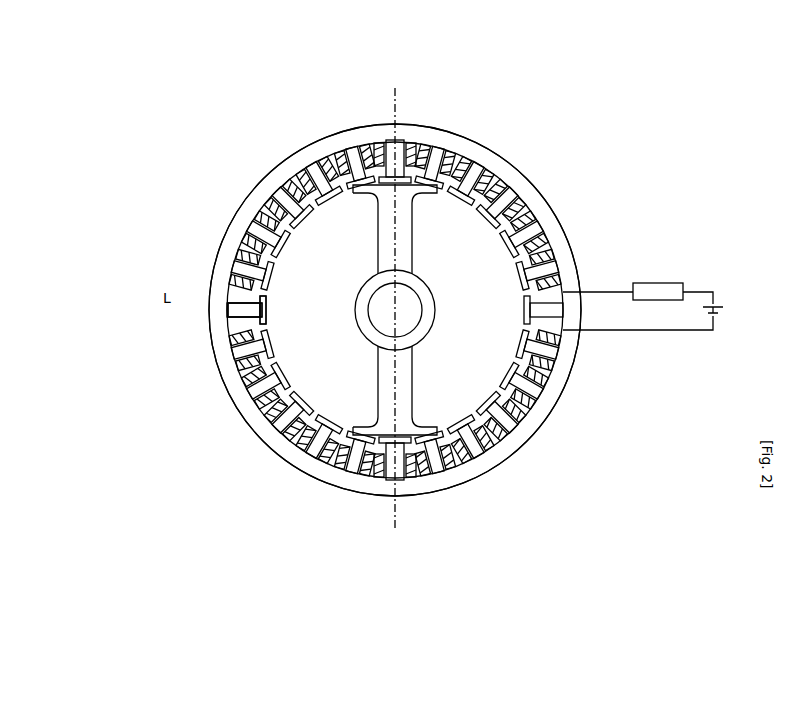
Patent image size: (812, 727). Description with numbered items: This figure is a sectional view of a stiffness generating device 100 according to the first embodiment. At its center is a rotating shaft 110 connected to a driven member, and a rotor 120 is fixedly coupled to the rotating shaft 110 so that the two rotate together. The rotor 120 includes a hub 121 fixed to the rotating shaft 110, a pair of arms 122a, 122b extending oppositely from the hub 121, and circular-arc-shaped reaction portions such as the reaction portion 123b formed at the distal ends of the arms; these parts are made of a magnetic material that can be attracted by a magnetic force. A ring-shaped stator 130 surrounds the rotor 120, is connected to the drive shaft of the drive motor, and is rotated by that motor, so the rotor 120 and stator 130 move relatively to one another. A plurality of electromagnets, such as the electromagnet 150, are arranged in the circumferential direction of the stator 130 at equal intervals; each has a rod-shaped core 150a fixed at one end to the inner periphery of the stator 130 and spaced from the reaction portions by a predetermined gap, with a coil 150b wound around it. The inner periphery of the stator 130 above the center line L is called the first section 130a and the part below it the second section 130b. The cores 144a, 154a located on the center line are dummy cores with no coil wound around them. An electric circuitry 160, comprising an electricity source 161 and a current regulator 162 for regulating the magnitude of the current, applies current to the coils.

The stiffness generating device 100 is at (207, 115).
The rotating shaft 110 is at (543, 452).
The rotor 120 is at (395, 293).
The hub 121 is at (545, 363).
The arm 122a is at (245, 175).
The arm 122b is at (250, 432).
The reaction portion 123b is at (356, 118).
The stator 130 is at (329, 291).
The first section 130a is at (140, 226).
The second section 130b is at (140, 410).
The dummy core 144a is at (576, 281).
The electromagnet 150 is at (145, 386).
The core 150a is at (240, 360).
The coil 150b is at (260, 380).
The dummy core 154a is at (225, 323).
The electric circuitry 160 is at (659, 321).
The electricity source 161 is at (735, 292).
The current regulator 162 is at (660, 282).